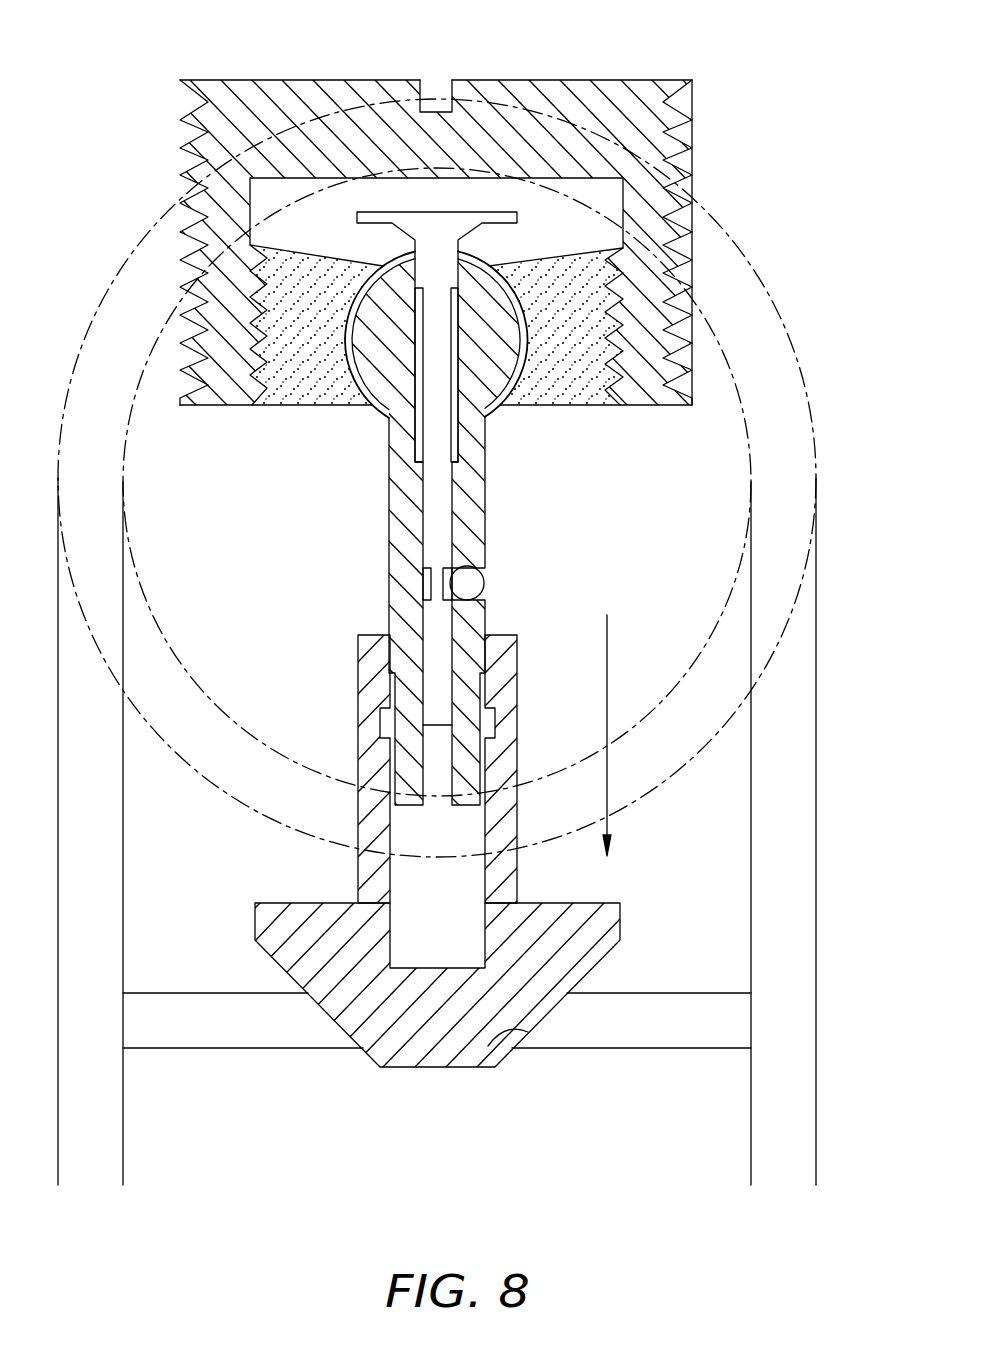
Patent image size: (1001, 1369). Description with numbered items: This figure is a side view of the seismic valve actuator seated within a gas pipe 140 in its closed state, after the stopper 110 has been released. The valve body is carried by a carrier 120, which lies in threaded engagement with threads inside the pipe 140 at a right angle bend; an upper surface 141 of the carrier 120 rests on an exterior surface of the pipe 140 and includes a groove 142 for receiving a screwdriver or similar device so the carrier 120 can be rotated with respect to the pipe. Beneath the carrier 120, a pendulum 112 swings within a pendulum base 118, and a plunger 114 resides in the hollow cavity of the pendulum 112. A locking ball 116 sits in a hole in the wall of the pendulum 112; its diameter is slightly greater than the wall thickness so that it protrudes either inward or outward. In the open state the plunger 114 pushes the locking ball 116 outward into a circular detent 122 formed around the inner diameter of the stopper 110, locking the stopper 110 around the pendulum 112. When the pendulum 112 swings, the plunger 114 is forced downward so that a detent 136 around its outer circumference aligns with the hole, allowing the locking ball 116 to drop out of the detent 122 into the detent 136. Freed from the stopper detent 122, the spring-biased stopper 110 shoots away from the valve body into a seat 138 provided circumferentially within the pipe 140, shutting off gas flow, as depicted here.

The stopper 110 is at (410, 1043).
The pendulum 112 is at (402, 507).
The plunger 114 is at (445, 508).
The locking ball 116 is at (470, 583).
The pendulum base 118 is at (313, 397).
The carrier 120 is at (668, 148).
The detent 122 is at (490, 720).
The detent 136 is at (427, 583).
The seat 138 is at (507, 1027).
The pipe 140 is at (792, 428).
The upper surface 141 is at (637, 80).
The groove 142 is at (430, 106).